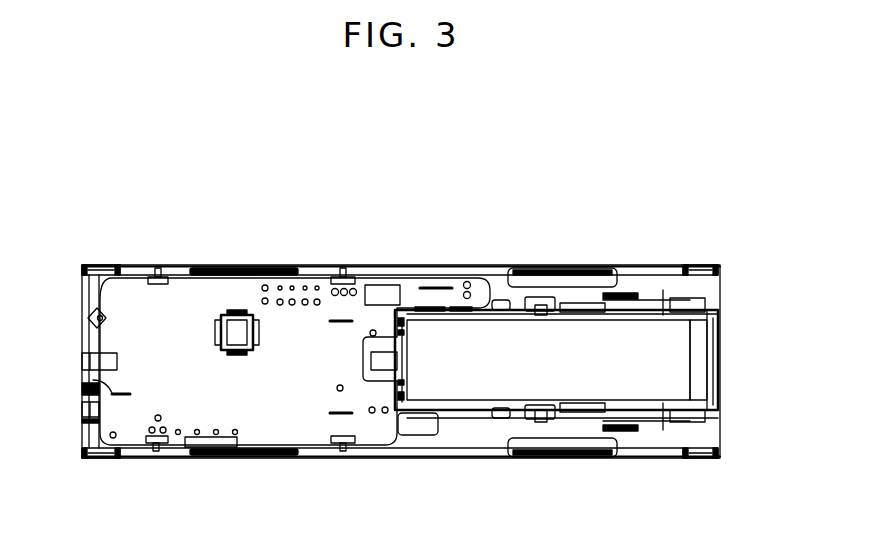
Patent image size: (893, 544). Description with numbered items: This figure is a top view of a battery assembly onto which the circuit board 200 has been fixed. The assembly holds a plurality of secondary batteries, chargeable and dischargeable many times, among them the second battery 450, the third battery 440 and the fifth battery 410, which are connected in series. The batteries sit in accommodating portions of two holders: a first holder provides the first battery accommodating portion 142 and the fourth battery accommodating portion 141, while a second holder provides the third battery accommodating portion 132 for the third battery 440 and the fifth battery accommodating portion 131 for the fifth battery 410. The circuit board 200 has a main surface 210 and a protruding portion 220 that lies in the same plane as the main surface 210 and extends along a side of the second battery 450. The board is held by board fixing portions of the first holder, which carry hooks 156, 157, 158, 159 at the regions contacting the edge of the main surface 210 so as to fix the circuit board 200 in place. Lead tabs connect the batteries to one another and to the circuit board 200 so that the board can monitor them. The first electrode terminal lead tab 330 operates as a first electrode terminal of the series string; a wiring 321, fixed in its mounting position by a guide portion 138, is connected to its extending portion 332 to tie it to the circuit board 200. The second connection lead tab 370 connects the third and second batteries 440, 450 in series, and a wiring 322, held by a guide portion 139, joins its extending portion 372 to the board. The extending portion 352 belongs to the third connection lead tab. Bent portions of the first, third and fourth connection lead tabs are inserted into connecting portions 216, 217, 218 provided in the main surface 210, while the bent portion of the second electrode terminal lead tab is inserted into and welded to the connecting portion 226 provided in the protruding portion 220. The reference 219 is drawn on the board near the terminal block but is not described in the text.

The fifth battery accommodating portion 131 is at (495, 442).
The third battery accommodating portion 132 is at (669, 278).
The guide portion 138 is at (608, 453).
The guide portion 139 is at (622, 285).
The fourth battery accommodating portion 141 is at (97, 450).
The first battery accommodating portion 142 is at (95, 277).
The hook 156 is at (150, 450).
The hook 157 is at (345, 450).
The hook 158 is at (158, 280).
The hook 159 is at (335, 272).
The circuit board 200 is at (278, 191).
The main surface 210 is at (279, 275).
The connecting portion 216 is at (347, 318).
The connecting portion 217 is at (86, 384).
The connecting portion 218 is at (352, 414).
The terminal block 219 is at (235, 436).
The protruding portion 220 is at (414, 285).
The connecting portion 226 is at (448, 285).
The wiring 321 is at (495, 418).
The wiring 322 is at (498, 300).
The first electrode terminal lead tab 330 is at (722, 408).
The extending portion 332 is at (705, 418).
The extending portion 352 is at (86, 410).
The second connection lead tab 370 is at (722, 310).
The extending portion 372 is at (698, 277).
The fifth battery 410 is at (522, 453).
The third battery 440 is at (523, 295).
The second battery 450 is at (708, 340).